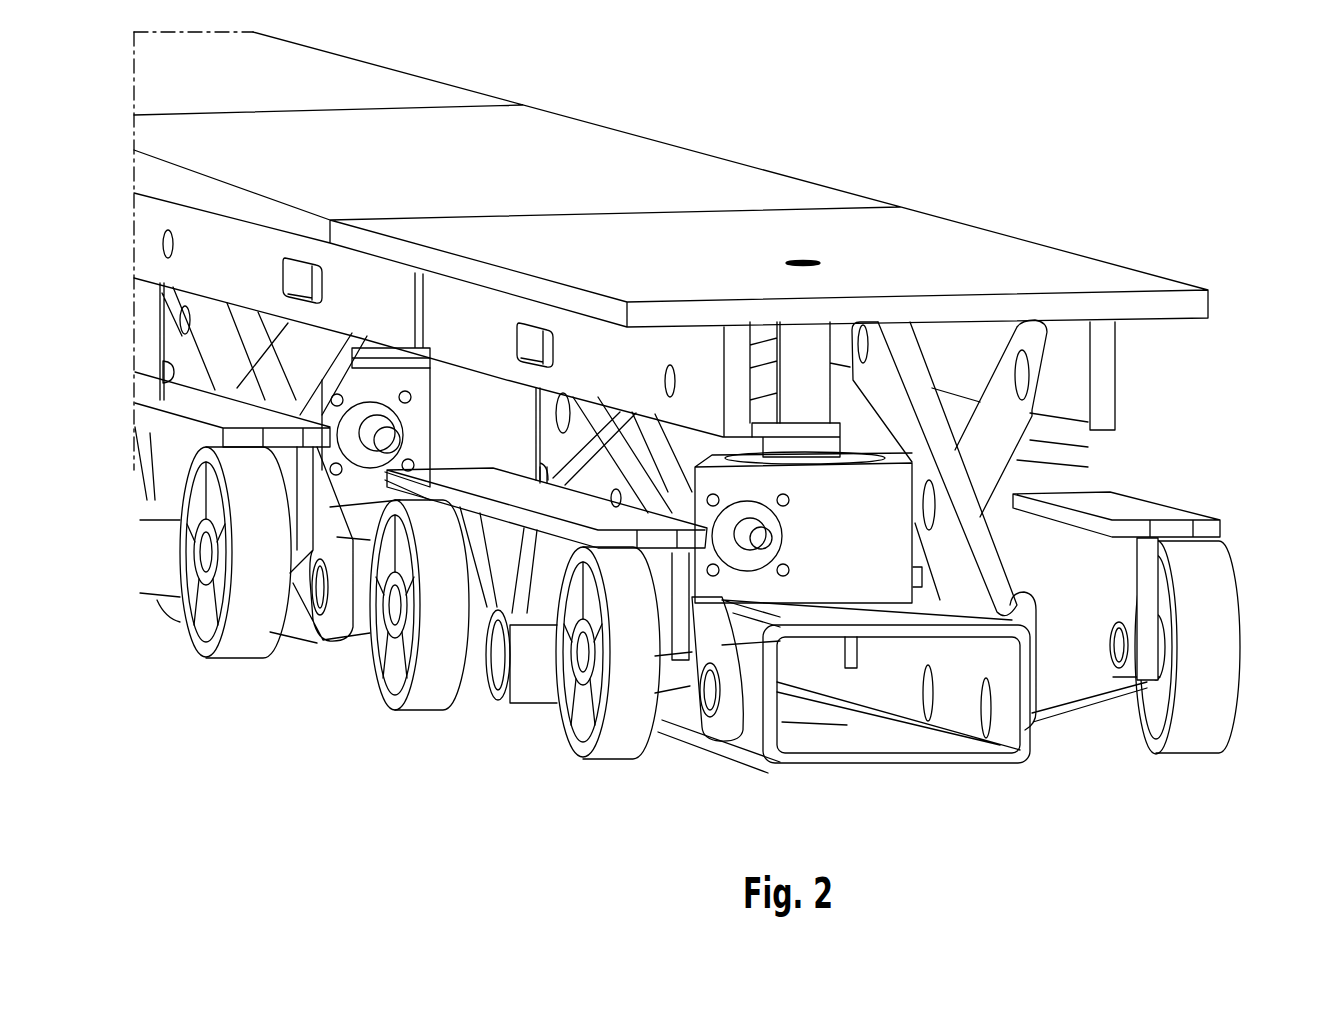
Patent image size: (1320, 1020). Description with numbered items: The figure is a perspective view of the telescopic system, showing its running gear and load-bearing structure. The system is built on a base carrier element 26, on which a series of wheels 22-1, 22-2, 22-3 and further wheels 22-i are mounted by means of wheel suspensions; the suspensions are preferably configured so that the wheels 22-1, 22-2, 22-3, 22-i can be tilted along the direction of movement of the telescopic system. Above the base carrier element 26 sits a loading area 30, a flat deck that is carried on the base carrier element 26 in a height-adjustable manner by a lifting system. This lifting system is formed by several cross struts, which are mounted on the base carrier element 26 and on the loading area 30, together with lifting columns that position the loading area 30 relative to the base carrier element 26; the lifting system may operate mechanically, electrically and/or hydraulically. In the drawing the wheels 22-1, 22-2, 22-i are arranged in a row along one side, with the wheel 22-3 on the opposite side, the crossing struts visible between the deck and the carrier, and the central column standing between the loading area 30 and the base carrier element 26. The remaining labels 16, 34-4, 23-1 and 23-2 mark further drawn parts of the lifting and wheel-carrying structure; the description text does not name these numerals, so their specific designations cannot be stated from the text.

The loading area 30 is at (758, 175).
The lifting unit 16 is at (803, 375).
The scissor lever 34-4 is at (1040, 448).
The wheel support beam 23-1 is at (680, 668).
The wheel support beam 23-2 is at (1210, 512).
The wheel 22-i is at (240, 633).
The wheel 22-1 is at (618, 733).
The wheel 22-2 is at (425, 690).
The wheel 22-3 is at (1187, 737).
The base carrier element 26 is at (892, 755).